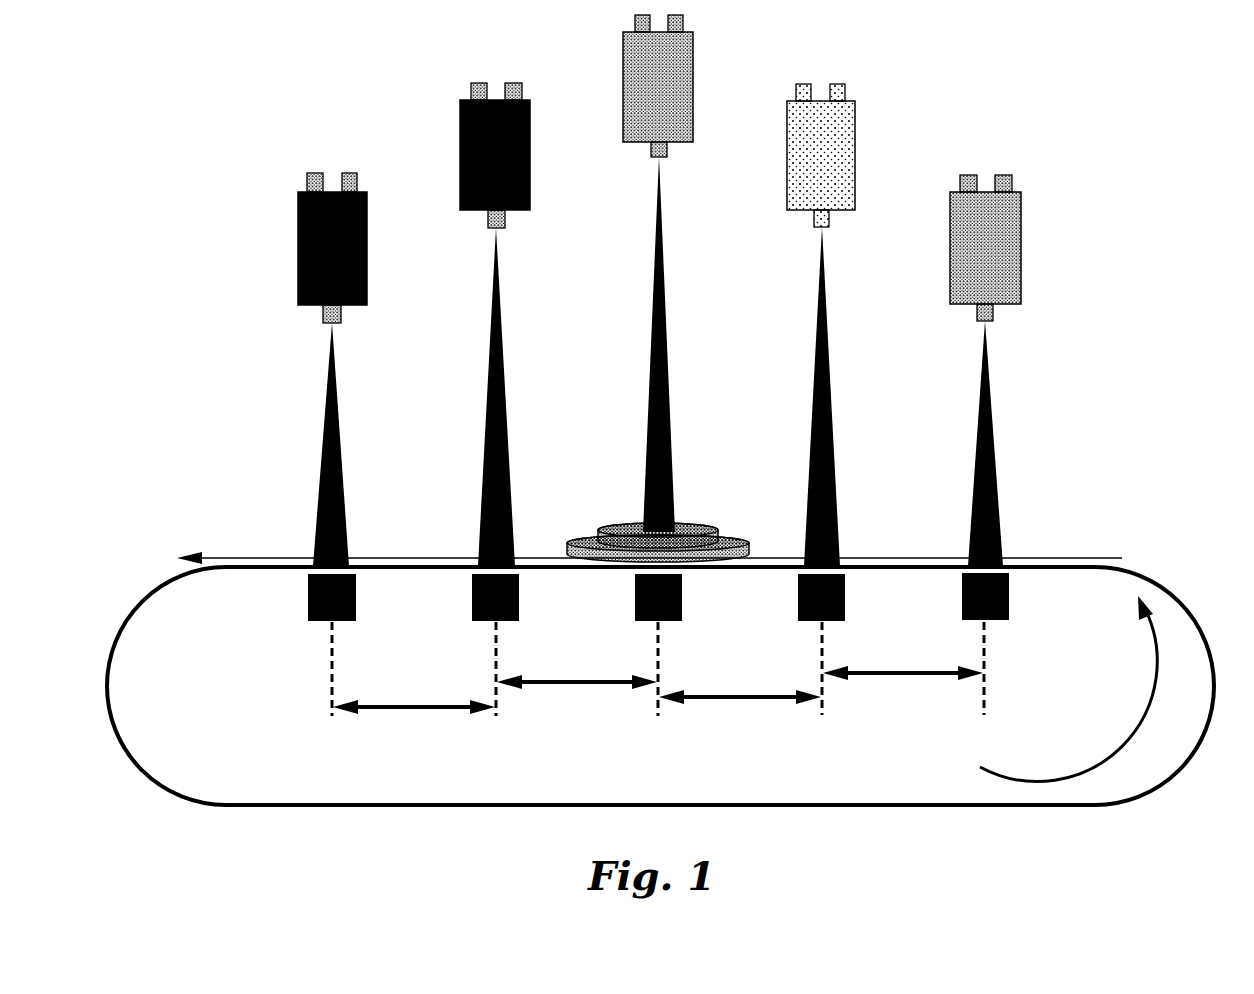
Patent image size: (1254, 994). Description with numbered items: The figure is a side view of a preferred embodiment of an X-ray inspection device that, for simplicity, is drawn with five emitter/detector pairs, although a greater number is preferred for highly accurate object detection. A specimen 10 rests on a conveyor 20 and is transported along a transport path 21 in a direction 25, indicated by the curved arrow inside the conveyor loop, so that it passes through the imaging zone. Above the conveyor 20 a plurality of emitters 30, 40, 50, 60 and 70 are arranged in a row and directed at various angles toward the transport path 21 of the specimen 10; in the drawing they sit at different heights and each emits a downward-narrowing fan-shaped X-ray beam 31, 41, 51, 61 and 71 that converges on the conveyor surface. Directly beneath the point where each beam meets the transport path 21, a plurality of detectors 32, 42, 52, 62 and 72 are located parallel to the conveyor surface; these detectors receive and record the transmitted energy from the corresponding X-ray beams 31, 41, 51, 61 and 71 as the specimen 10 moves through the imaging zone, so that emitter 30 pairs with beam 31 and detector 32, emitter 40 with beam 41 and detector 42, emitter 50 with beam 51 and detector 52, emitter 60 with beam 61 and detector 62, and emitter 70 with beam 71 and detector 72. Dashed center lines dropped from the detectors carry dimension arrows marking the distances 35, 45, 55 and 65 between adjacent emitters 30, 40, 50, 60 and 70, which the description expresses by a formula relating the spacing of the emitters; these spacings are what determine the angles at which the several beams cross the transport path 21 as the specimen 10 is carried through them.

The specimen 10 is at (705, 535).
The conveyor 20 is at (1142, 572).
The transport path 21 is at (205, 559).
The direction 25 is at (1068, 689).
The emitter 30 is at (985, 248).
The fan-shaped X-ray beam 31 is at (997, 470).
The detector 32 is at (1008, 575).
The distance 35 is at (903, 684).
The emitter 40 is at (822, 152).
The fan-shaped X-ray beam 41 is at (825, 450).
The detector 42 is at (825, 600).
The distance 45 is at (740, 710).
The emitter 50 is at (660, 83).
The fan-shaped X-ray beam 51 is at (660, 410).
The detector 52 is at (655, 597).
The distance 55 is at (577, 694).
The emitter 60 is at (497, 152).
The fan-shaped X-ray beam 61 is at (500, 450).
The detector 62 is at (495, 595).
The distance 65 is at (414, 717).
The emitter 70 is at (330, 248).
The fan-shaped X-ray beam 71 is at (335, 480).
The detector 72 is at (322, 590).